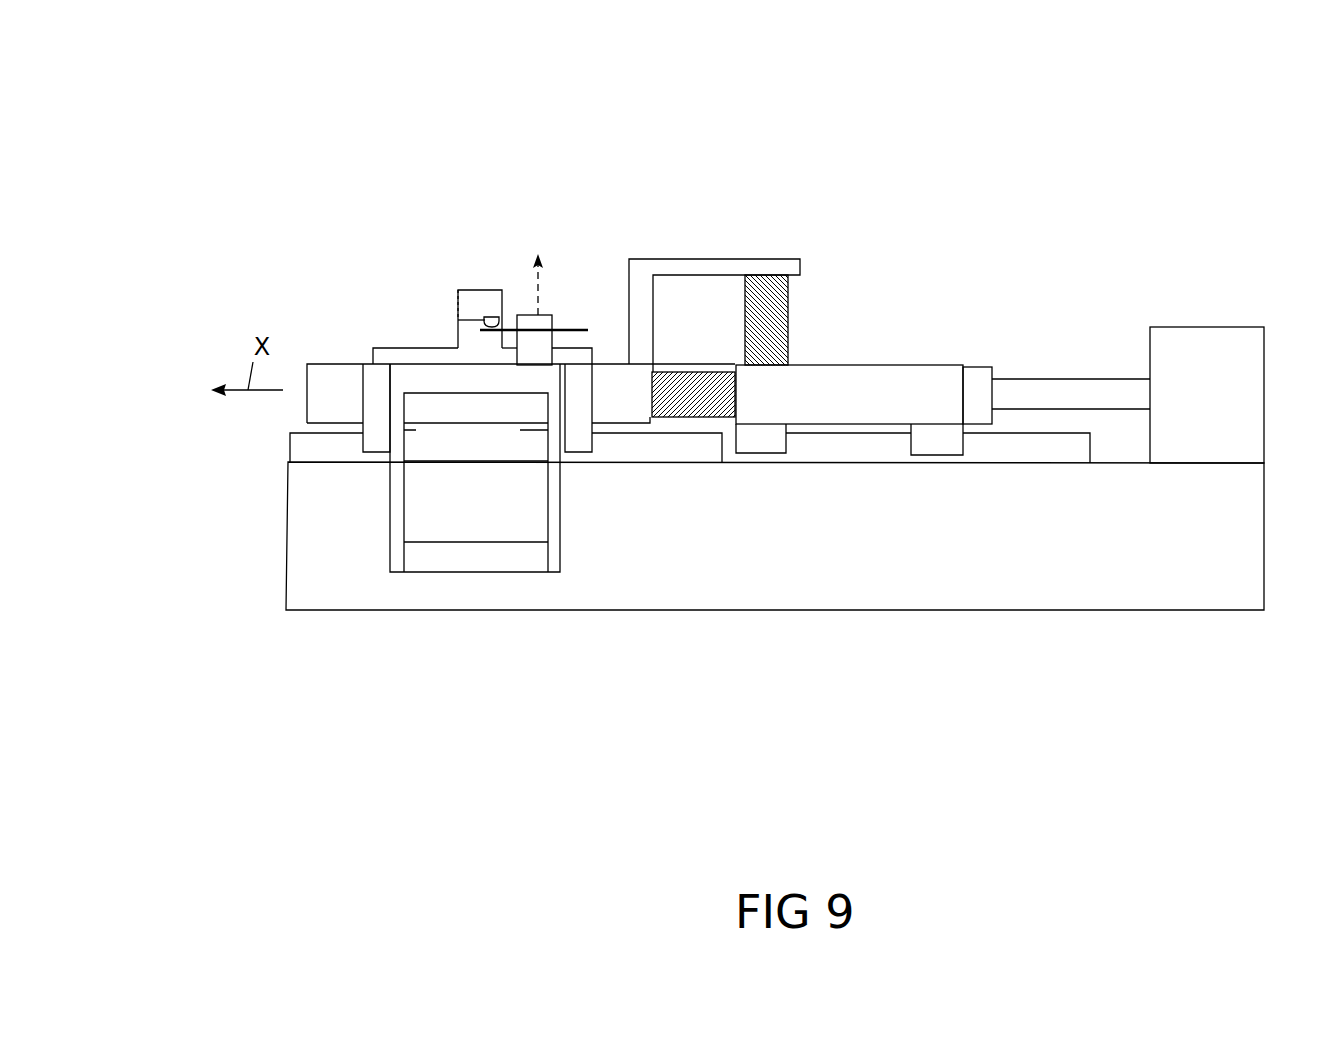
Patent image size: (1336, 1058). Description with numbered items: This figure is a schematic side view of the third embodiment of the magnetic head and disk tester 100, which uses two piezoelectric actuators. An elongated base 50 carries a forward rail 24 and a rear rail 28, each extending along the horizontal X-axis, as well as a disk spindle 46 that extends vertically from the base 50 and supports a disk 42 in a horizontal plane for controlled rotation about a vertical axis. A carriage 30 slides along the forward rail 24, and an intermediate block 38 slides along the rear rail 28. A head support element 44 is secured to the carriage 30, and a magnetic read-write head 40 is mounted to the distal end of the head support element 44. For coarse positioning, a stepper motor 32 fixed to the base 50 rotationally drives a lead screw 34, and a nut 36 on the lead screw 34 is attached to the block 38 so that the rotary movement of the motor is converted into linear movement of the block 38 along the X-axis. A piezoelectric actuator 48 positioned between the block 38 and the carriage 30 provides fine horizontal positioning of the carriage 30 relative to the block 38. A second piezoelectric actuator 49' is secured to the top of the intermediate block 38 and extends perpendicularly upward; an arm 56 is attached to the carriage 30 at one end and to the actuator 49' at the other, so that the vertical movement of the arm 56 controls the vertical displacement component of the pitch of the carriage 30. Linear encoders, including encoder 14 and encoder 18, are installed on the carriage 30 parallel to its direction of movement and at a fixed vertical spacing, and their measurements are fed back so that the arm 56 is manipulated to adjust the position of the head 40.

The magnetic head and disk tester 100 is at (1302, 208).
The numerical output linear encoder 14 is at (507, 445).
The numerical output linear encoder 18 is at (503, 558).
The forward rail 24 is at (302, 443).
The rear rail 28 is at (1035, 448).
The carriage 30 is at (367, 320).
The stepper motor 32 is at (1212, 358).
The lead screw 34 is at (1065, 395).
The nut 36 is at (978, 380).
The intermediate block 38 is at (897, 387).
The magnetic read-write head 40 is at (494, 317).
The disk 42 is at (570, 333).
The head support element 44 is at (468, 290).
The disk spindle 46 is at (541, 315).
The piezoelectric actuator 48 is at (697, 390).
The second piezoelectric actuator 49' is at (856, 252).
The base 50 is at (985, 585).
The arm 56 is at (673, 268).